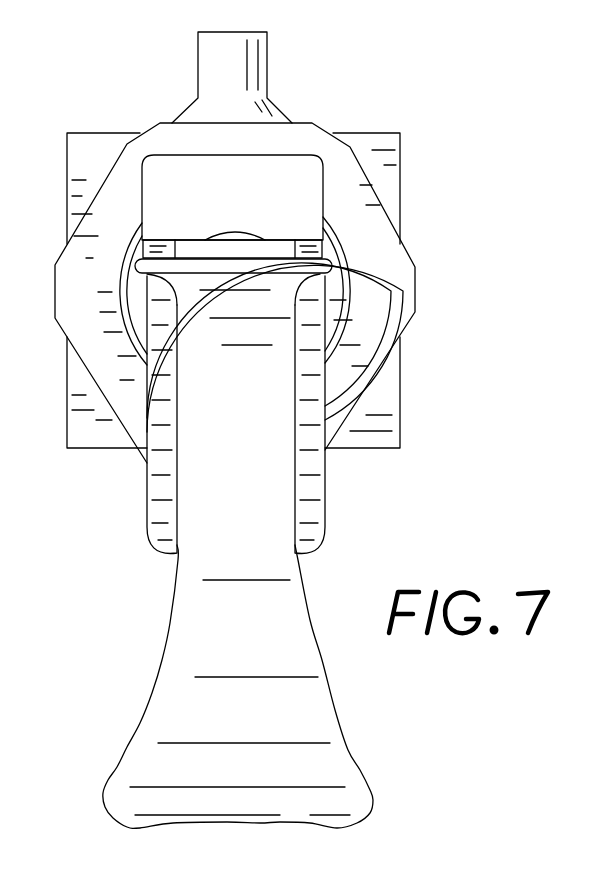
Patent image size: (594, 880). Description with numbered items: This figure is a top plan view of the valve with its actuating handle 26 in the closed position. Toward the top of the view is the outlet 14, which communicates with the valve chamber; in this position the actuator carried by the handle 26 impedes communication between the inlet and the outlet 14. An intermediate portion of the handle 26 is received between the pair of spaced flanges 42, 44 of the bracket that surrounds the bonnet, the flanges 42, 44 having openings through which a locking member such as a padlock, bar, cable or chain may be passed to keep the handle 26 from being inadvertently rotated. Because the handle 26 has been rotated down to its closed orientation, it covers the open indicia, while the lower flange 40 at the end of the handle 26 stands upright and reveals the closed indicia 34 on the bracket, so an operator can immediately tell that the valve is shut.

The outlet 14 is at (258, 60).
The actuating handle 26 is at (317, 720).
The closed indicia 34 is at (293, 165).
The lower flange 40 is at (295, 263).
The flange 42 is at (313, 481).
The flange 44 is at (156, 478).